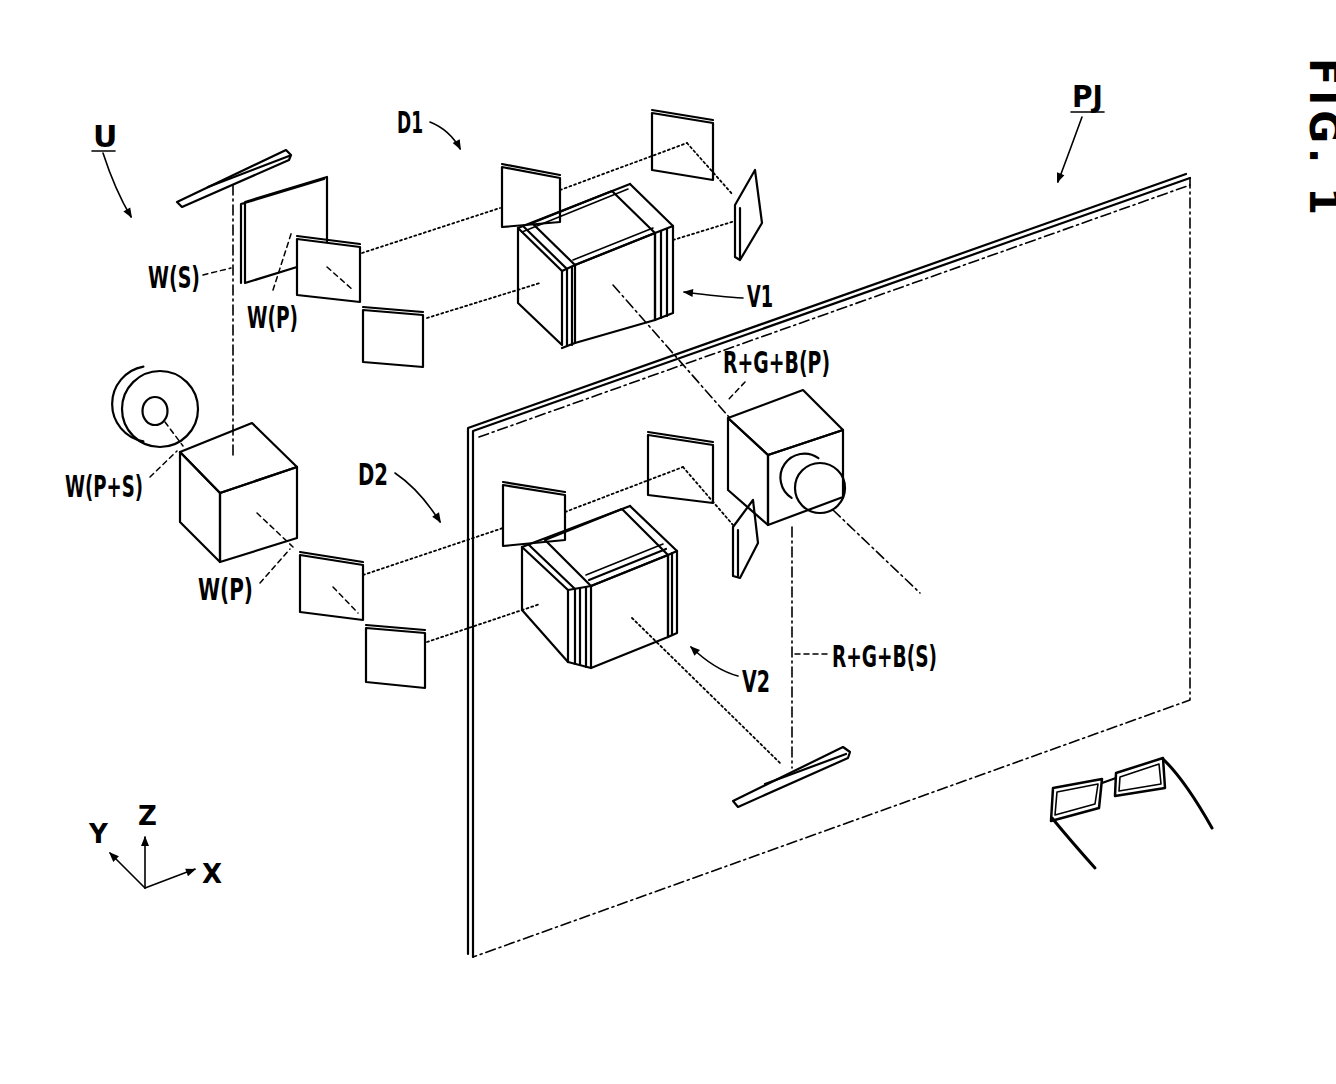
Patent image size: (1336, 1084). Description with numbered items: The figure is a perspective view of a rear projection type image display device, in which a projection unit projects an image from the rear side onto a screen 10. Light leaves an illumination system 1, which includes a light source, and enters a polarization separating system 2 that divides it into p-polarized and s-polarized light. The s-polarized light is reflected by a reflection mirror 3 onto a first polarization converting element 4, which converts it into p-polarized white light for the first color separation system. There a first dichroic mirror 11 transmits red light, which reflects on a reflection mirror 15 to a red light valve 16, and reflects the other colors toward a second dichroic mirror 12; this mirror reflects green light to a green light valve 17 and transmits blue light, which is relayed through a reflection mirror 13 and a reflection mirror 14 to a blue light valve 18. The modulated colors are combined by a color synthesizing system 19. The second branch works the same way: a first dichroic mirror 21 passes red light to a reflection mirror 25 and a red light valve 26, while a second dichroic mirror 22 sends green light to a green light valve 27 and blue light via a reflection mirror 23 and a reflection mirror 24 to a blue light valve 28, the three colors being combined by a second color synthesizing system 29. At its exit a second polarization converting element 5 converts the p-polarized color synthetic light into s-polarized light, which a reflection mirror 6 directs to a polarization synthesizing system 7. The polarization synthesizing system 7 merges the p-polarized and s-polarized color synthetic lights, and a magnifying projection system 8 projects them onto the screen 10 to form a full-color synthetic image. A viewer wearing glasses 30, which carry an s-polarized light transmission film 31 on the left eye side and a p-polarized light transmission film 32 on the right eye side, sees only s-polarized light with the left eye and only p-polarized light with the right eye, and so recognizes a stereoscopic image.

The illumination system 1 is at (143, 365).
The polarization separating system 2 is at (198, 540).
The reflection mirror 3 is at (253, 157).
The first polarization converting element 4 is at (331, 200).
The second polarization converting element 5 is at (611, 657).
The reflection mirror 6 is at (850, 748).
The polarization synthesizing system 7 is at (827, 420).
The projection system 8 is at (846, 492).
The screen 10 is at (1192, 337).
The first dichroic mirror 11 is at (318, 295).
The second dichroic mirror 12 is at (520, 166).
The reflection mirror 13 is at (717, 140).
The reflection mirror 14 is at (765, 202).
The reflection mirror 15 is at (389, 368).
The red light valve 16 is at (540, 320).
The green light valve 17 is at (581, 190).
The blue light valve 18 is at (674, 265).
The color synthesizing system 19 is at (597, 207).
The first dichroic mirror 21 is at (327, 603).
The second dichroic mirror 22 is at (533, 487).
The reflection mirror 23 is at (675, 436).
The reflection mirror 24 is at (740, 578).
The reflection mirror 25 is at (396, 690).
The red light valve 26 is at (560, 650).
The green light valve 27 is at (593, 500).
The blue light valve 28 is at (680, 607).
The second color synthesizing system 29 is at (617, 543).
The glasses 30 is at (1147, 803).
The s-polarized light transmission film 31 is at (1080, 803).
The p-polarized light transmission film 32 is at (1140, 790).